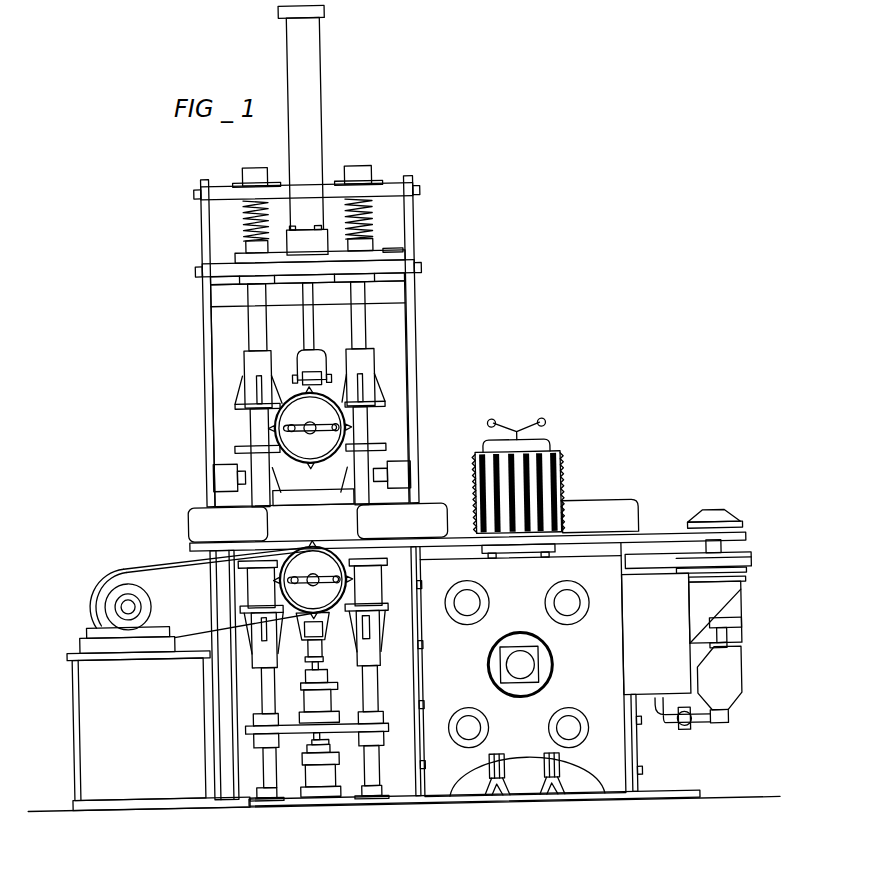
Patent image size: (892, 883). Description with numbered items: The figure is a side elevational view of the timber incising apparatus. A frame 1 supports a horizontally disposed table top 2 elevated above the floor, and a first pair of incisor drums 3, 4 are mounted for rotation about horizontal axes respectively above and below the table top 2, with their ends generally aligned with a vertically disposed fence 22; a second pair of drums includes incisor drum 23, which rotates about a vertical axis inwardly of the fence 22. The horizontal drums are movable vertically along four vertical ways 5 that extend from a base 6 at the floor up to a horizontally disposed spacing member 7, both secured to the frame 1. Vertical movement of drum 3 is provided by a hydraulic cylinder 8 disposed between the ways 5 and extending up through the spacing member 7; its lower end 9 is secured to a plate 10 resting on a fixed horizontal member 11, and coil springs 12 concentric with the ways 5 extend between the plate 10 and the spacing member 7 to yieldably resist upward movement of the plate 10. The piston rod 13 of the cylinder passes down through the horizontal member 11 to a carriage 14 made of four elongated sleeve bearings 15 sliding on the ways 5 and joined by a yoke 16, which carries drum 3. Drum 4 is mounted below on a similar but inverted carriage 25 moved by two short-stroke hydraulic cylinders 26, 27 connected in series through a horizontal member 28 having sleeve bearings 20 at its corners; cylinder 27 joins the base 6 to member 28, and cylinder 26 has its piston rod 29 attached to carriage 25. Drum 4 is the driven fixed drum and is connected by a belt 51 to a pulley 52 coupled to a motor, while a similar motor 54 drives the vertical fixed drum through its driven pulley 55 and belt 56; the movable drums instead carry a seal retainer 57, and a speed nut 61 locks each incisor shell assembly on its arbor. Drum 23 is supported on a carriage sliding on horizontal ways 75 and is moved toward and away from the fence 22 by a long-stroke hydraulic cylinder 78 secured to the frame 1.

The frame 1 is at (222, 733).
The table top 2 is at (189, 532).
The incisor drum 3 is at (311, 446).
The incisor drum 4 is at (313, 580).
The vertical ways 5 is at (258, 321).
The base 6 is at (267, 802).
The spacing member 7 is at (398, 182).
The hydraulic cylinder 8 is at (325, 110).
The lower end 9 is at (322, 237).
The plate 10 is at (381, 256).
The fixed horizontal member 11 is at (404, 266).
The coil springs 12 is at (249, 215).
The piston rod 13 is at (310, 325).
The carriage 14 is at (390, 380).
The sleeve bearings 15 is at (373, 352).
The yoke 16 is at (245, 405).
The sleeve bearings 20 is at (374, 719).
The fence 22 is at (619, 483).
The incisor drum 23 is at (566, 467).
The carriage 25 is at (382, 594).
The hydraulic cylinder 26 is at (316, 704).
The hydraulic cylinder 27 is at (314, 776).
The horizontal member 28 is at (386, 729).
The piston rod 29 is at (309, 663).
The belt 51 is at (160, 566).
The pulley 52 is at (150, 595).
The motor 54 is at (732, 682).
The driven pulley 55 is at (744, 557).
The belt 56 is at (752, 566).
The seal retainer 57 is at (555, 552).
The speed nut 61 is at (508, 421).
The horizontal ways 75 is at (565, 605).
The hydraulic cylinder 78 is at (505, 666).